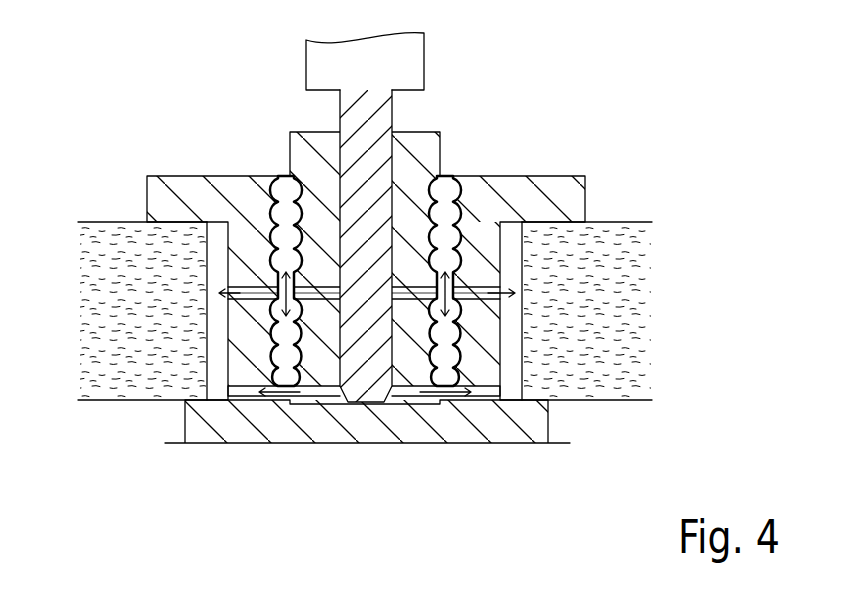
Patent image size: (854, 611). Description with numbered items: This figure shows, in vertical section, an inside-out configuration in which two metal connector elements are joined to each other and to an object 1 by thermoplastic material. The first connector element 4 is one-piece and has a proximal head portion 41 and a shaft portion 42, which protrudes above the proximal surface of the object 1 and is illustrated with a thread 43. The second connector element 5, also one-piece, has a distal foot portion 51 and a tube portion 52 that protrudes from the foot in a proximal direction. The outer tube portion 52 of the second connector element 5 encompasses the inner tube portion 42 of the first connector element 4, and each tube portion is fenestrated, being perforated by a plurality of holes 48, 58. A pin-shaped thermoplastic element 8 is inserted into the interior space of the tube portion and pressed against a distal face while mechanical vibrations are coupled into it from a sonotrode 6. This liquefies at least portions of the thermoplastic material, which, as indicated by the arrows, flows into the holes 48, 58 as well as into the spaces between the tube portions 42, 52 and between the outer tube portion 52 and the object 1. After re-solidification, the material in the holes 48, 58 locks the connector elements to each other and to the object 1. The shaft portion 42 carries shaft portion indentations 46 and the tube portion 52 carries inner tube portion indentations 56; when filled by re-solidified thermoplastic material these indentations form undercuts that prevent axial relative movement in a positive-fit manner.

The object 1 is at (594, 264).
The first connector element 4 is at (423, 400).
The second connector element 5 is at (268, 260).
The sonotrode 6 is at (397, 60).
The thermoplastic element 8 is at (376, 240).
The head portion 41 is at (523, 423).
The shaft portion 42 is at (318, 157).
The thread 43 is at (436, 137).
The shaft portion indentations 46 is at (458, 206).
The holes 48 is at (417, 297).
The distal foot portion 51 is at (203, 198).
The tube portion 52 is at (480, 342).
The inner tube portion indentations 56 is at (463, 237).
The holes 58 is at (253, 297).